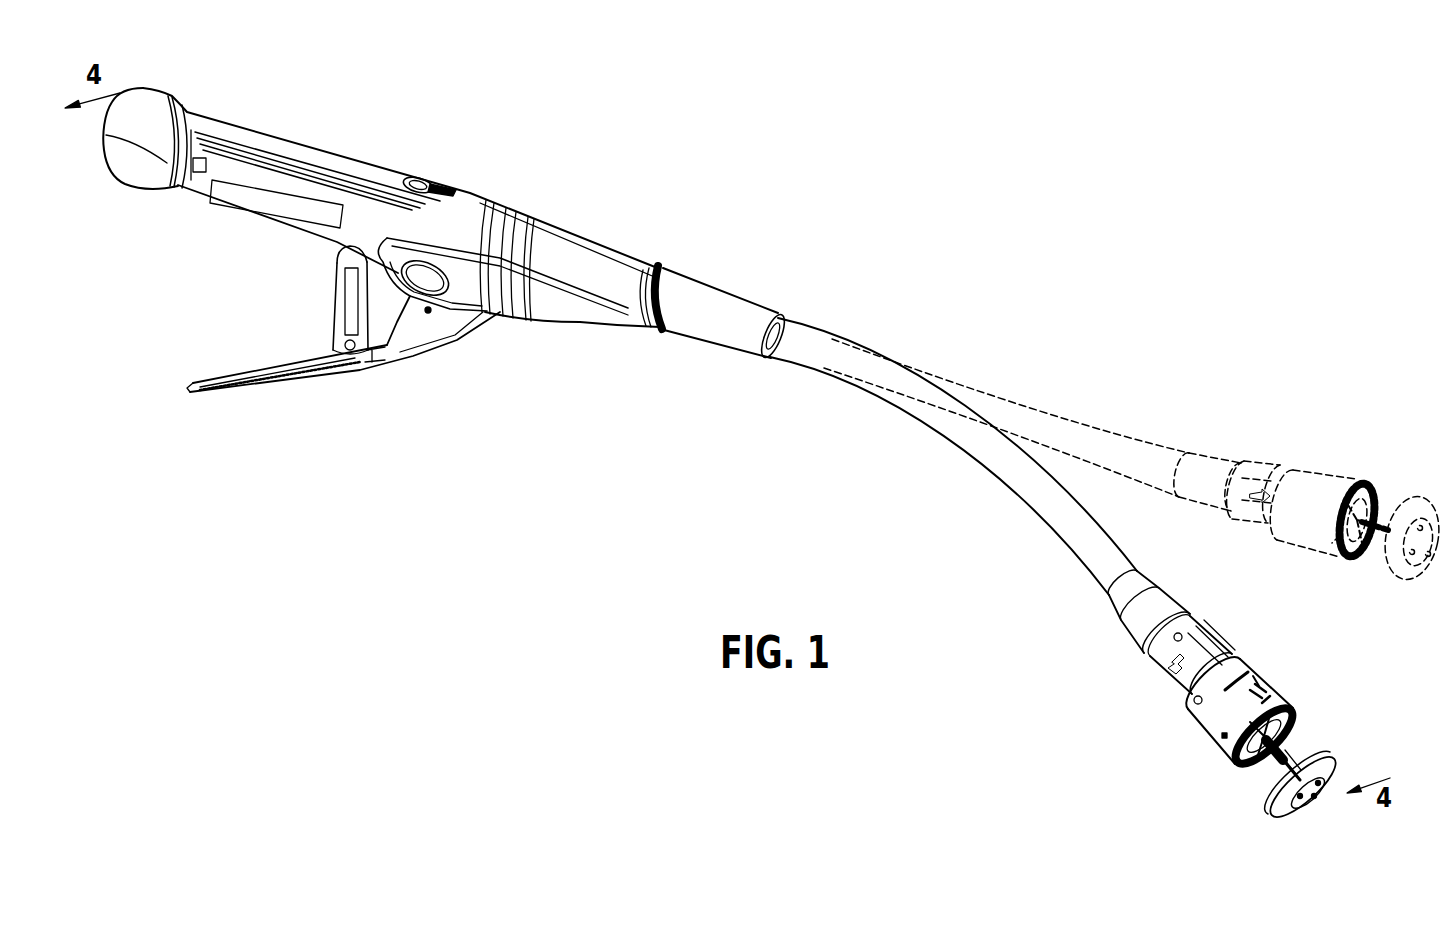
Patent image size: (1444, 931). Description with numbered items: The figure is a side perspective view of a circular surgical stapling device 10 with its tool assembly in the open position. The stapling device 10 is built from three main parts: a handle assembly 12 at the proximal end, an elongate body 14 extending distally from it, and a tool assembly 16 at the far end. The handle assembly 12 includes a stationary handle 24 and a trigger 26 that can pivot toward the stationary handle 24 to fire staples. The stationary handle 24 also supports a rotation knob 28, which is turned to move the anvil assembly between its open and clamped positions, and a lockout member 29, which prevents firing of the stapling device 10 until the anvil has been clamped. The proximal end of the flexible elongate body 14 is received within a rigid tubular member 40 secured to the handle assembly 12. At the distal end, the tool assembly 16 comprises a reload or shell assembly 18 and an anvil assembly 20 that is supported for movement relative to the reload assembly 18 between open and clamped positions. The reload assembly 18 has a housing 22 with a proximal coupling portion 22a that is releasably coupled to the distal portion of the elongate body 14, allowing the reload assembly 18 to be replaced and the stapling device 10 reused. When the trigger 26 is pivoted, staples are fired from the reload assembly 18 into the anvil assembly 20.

The stapling device 10 is at (773, 458).
The handle assembly 12 is at (402, 225).
The elongate body 14 is at (1074, 420).
The tool assembly 16 is at (1332, 410).
The reload assembly 18 is at (1365, 435).
The anvil assembly 20 is at (1285, 808).
The housing 22 is at (1190, 625).
The proximal coupling portion 22a is at (1178, 686).
The stationary handle 24 is at (290, 160).
The trigger 26 is at (288, 388).
The rotation knob 28 is at (163, 117).
The lockout member 29 is at (337, 300).
The rigid tubular member 40 is at (735, 305).